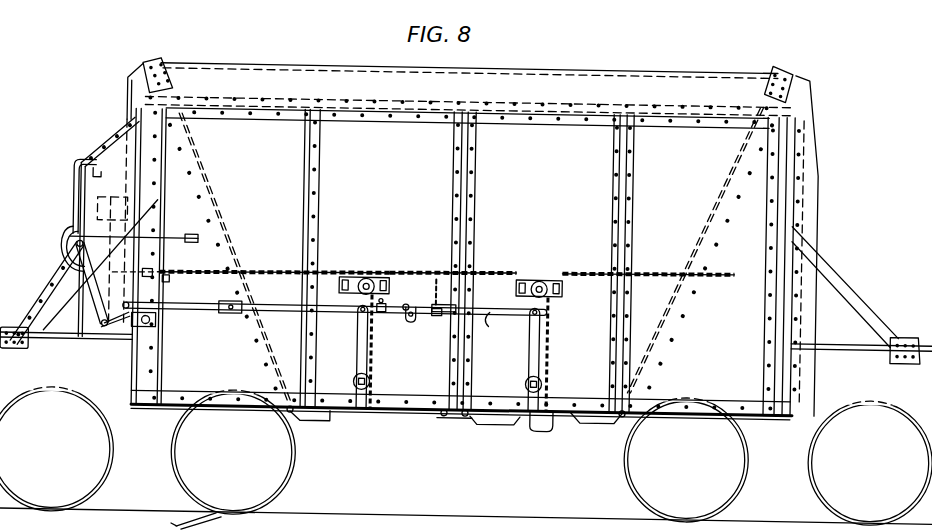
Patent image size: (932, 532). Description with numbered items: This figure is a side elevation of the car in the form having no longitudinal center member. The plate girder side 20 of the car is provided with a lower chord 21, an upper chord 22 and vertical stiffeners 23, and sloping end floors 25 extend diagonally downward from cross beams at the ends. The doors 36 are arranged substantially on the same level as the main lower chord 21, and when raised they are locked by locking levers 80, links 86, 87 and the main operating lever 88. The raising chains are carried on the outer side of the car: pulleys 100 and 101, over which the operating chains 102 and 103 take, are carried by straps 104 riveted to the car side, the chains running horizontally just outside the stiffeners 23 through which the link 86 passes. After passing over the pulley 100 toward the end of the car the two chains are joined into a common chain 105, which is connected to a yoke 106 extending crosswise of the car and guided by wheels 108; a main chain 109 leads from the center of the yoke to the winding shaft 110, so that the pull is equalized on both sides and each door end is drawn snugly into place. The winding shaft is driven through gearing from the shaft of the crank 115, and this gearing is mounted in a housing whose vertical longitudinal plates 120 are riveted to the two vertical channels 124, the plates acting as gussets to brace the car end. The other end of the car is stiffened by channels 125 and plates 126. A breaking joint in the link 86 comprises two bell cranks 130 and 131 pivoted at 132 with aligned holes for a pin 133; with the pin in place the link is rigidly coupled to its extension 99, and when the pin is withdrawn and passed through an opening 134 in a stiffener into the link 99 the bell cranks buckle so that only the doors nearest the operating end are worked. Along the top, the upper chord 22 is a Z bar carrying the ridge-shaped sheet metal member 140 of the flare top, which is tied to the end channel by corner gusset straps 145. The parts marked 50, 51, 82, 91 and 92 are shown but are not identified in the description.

The plate girder side 20 is at (463, 260).
The lower chord 21 is at (737, 403).
The upper chord 22 is at (438, 115).
The vertical stiffeners 23 is at (318, 172).
The sloping end floors 25 is at (210, 198).
The doors 36 is at (332, 424).
The door operating shaft bearing 50 is at (493, 418).
The door shaft 51 is at (445, 416).
The locking levers 80 is at (362, 352).
The lever hook 82 is at (535, 431).
The link 86 is at (273, 309).
The link 87 is at (334, 309).
The main operating lever 88 is at (42, 228).
The connecting rod 91 is at (80, 268).
The hand lever rod 92 is at (160, 237).
The link extension 99 is at (502, 328).
The pulley 100 is at (385, 256).
The pulley 101 is at (548, 271).
The operating chain 102 is at (373, 314).
The operating chain 103 is at (503, 263).
The straps 104 is at (350, 295).
The common chain 105 is at (245, 276).
The yoke 106 is at (168, 277).
The wheels 108 is at (172, 283).
The main chain 109 is at (110, 278).
The winding shaft 110 is at (102, 283).
The crank 115 is at (75, 224).
The vertical longitudinal plates 120 is at (116, 246).
The vertical channels 124 is at (133, 101).
The channels 125 is at (797, 99).
The plates 126 is at (810, 208).
The bell crank 130 is at (391, 302).
The bell crank 131 is at (436, 319).
The pivot 132 is at (412, 323).
The pin 133 is at (435, 303).
The opening 134 is at (457, 310).
The ridge-shaped sheet metal member 140 is at (469, 88).
The corner gusset straps 145 is at (140, 78).